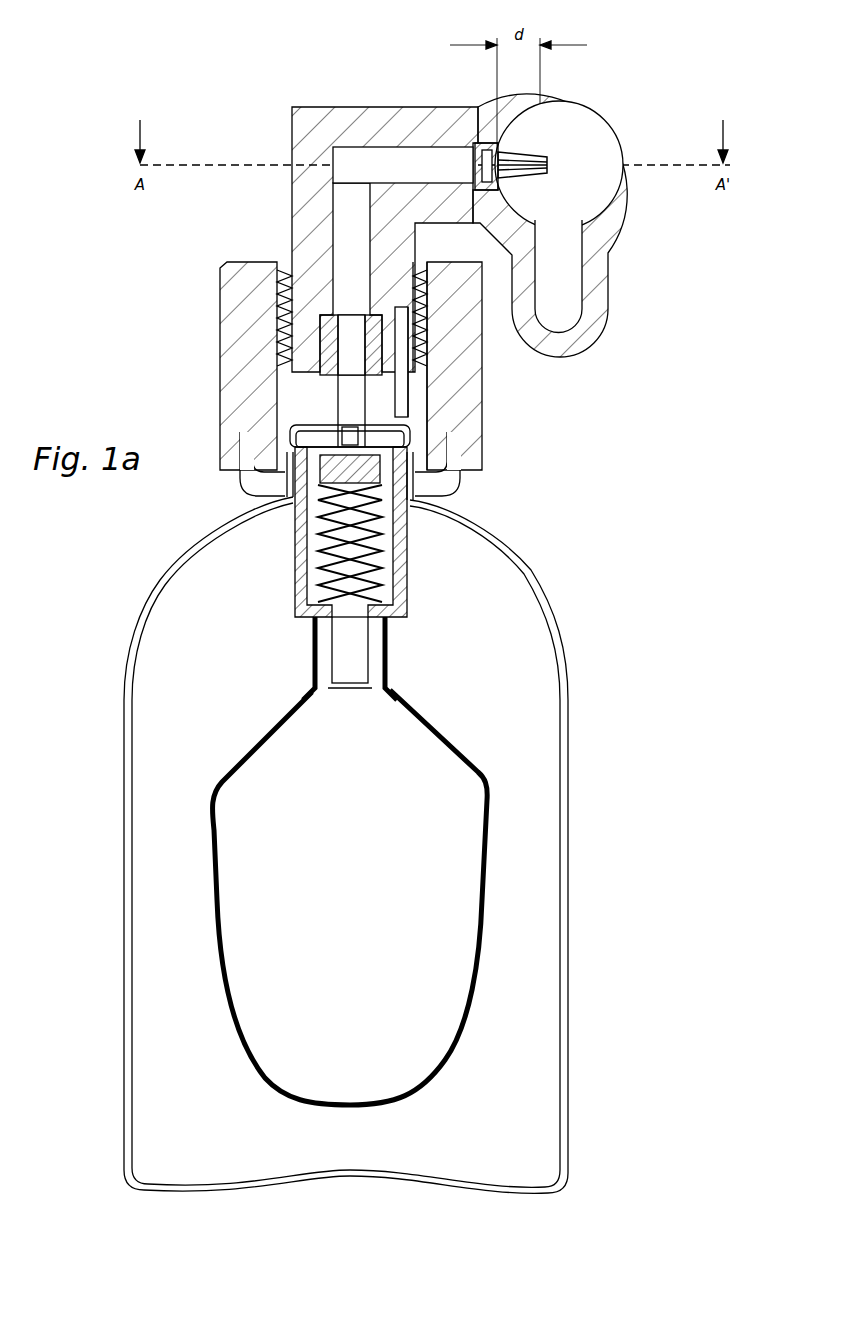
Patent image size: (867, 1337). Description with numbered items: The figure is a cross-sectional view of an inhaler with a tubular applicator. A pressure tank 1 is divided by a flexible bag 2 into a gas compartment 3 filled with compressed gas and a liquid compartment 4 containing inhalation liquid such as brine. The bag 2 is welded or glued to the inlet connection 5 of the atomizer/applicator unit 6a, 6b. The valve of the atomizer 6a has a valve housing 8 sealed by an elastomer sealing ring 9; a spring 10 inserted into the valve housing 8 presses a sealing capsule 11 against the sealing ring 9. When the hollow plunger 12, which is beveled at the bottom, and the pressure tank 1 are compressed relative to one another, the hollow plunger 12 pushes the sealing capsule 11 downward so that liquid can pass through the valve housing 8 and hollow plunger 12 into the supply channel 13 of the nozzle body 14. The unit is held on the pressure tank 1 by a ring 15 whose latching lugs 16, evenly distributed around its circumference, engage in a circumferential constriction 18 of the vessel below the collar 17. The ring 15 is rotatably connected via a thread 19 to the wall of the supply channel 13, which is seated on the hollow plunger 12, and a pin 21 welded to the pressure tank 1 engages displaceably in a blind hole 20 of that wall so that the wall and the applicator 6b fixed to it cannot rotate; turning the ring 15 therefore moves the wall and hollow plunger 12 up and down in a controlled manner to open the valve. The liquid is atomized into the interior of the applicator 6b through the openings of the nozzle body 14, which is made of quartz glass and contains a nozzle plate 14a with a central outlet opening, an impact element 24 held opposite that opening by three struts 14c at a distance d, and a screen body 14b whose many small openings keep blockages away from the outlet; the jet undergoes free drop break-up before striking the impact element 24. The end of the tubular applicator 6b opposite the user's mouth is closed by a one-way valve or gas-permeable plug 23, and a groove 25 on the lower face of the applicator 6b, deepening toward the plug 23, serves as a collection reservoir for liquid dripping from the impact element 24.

The pressure tank 1 is at (528, 567).
The flexible bag 2 is at (257, 737).
The gas compartment 3 is at (174, 1046).
The liquid compartment 4 is at (324, 924).
The inlet connection 5 is at (390, 647).
The atomizer 6a is at (297, 118).
The applicator 6b is at (655, 200).
The valve housing 8 is at (300, 573).
The sealing ring 9 is at (373, 432).
The spring 10 is at (380, 570).
The sealing capsule 11 is at (312, 500).
The hollow plunger 12 is at (377, 370).
The supply channel 13 is at (342, 306).
The nozzle body 14 is at (482, 143).
The nozzle plate 14a is at (498, 187).
The screen body 14b is at (480, 147).
The struts 14c is at (537, 173).
The ring 15 is at (243, 272).
The latching lugs 16 is at (445, 488).
The collar 17 is at (285, 440).
The circumferential constriction 18 is at (265, 505).
The thread 19 is at (285, 335).
The blind hole 20 is at (398, 338).
The pin 21 is at (402, 378).
The gas-permeable plug 23 is at (547, 180).
The impact element 24 is at (540, 160).
The groove 25 is at (573, 282).